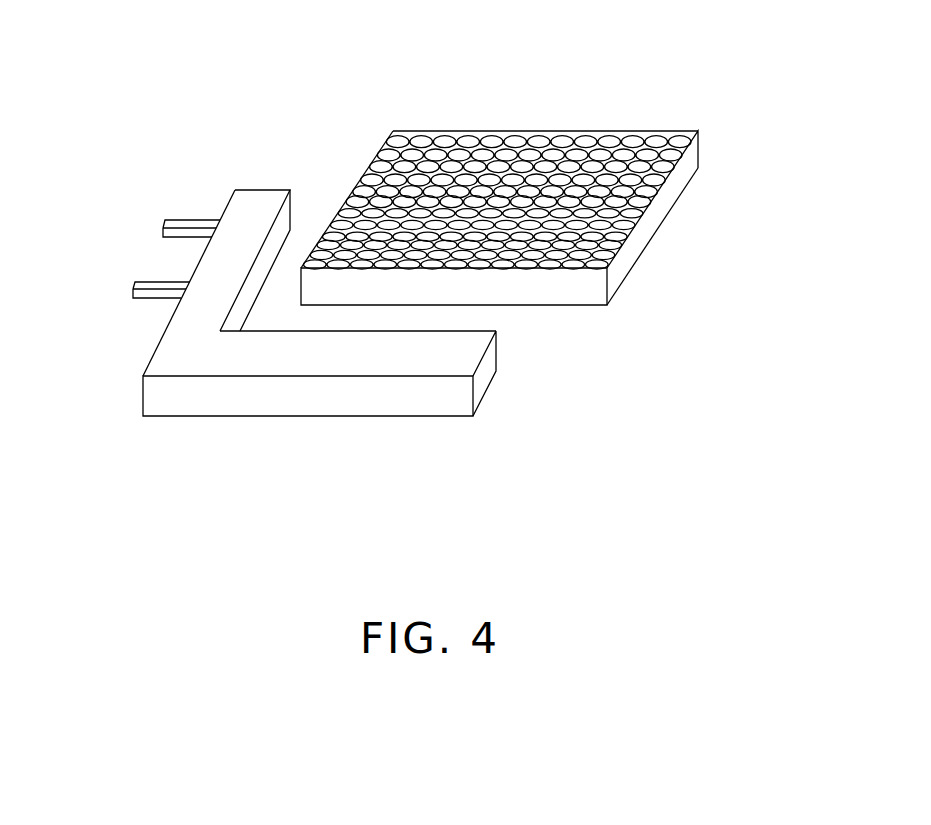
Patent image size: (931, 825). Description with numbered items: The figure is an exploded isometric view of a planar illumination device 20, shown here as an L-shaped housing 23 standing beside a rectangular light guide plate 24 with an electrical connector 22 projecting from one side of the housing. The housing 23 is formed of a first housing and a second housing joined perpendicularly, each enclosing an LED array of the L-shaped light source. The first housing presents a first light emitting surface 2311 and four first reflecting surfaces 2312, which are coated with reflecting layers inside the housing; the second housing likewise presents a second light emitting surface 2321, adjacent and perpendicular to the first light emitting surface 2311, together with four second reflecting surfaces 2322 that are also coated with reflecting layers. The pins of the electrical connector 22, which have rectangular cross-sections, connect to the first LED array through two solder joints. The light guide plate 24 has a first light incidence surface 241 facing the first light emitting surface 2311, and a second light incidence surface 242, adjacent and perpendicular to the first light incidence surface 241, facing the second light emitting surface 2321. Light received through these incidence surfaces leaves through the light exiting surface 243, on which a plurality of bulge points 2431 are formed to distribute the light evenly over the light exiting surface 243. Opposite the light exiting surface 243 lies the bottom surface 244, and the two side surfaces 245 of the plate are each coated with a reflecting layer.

The planar illumination device 20 is at (445, 57).
The electrical connector 22 is at (165, 230).
The L-shaped housing 23 is at (138, 350).
The first light emitting surface 2311 is at (283, 218).
The first reflecting surfaces 2312 is at (262, 185).
The second light emitting surface 2321 is at (502, 357).
The second reflecting surfaces 2322 is at (410, 393).
The light guide plate 24 is at (474, 104).
The first light incidence surface 241 is at (370, 152).
The second light incidence surface 242 is at (556, 293).
The light exiting surface 243 is at (630, 135).
The bulge points 2431 is at (508, 143).
The bottom surface 244 is at (624, 288).
The side surfaces 245 is at (702, 149).